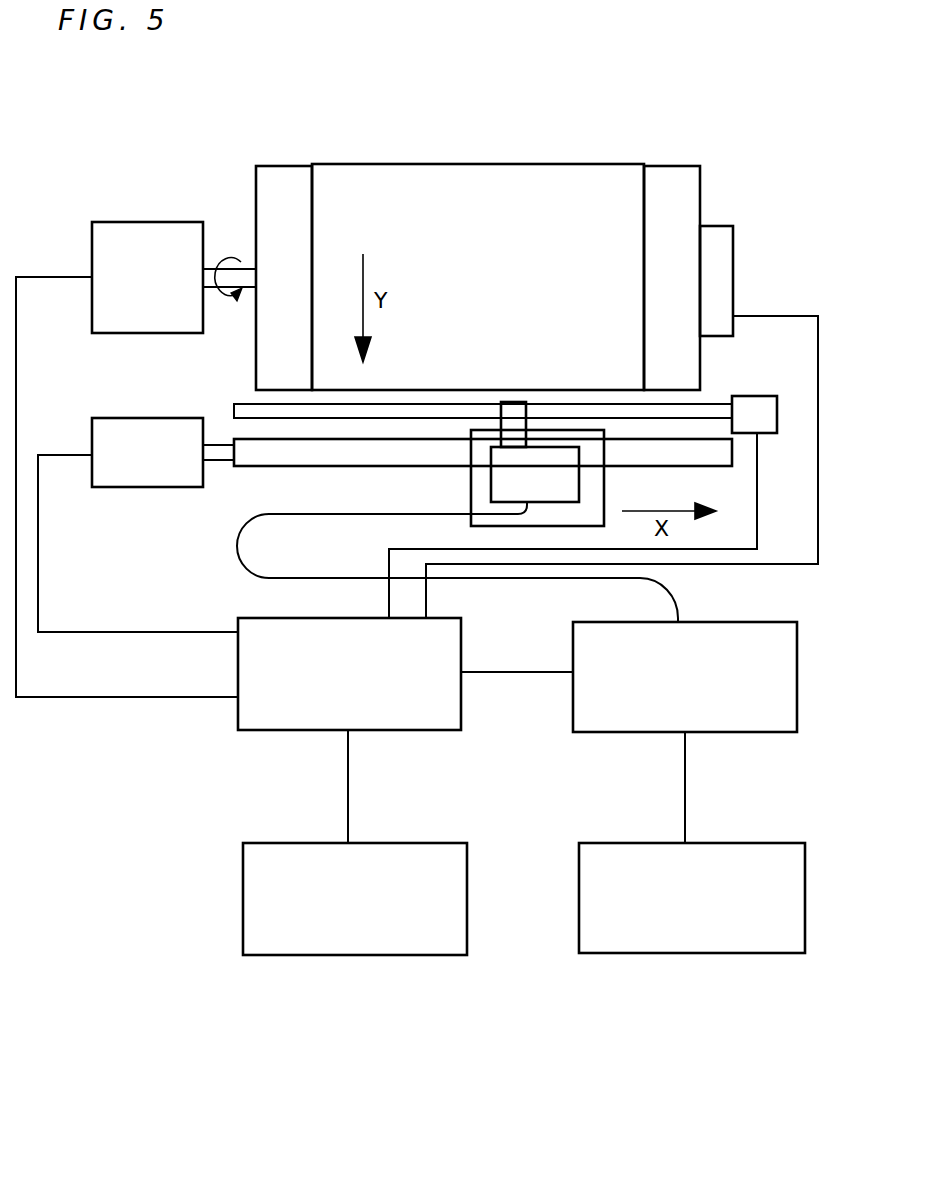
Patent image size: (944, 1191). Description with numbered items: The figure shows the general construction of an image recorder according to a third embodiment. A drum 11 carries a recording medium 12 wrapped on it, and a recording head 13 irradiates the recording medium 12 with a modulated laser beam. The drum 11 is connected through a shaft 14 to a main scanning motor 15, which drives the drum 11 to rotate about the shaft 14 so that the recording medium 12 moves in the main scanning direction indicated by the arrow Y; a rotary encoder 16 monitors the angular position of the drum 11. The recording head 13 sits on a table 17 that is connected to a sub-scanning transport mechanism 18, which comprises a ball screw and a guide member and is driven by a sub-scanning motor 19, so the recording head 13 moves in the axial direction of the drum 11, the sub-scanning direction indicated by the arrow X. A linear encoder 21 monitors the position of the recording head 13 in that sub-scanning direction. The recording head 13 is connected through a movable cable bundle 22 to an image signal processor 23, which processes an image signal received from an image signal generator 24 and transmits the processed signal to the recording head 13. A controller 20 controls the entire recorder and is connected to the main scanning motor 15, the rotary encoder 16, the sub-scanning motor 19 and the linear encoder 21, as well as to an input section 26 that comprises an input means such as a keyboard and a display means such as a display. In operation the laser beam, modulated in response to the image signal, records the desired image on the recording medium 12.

The drum 11 is at (283, 178).
The recording medium 12 is at (490, 175).
The recording head 13 is at (567, 474).
The shaft 14 is at (246, 272).
The main scanning motor 15 is at (123, 237).
The rotary encoder 16 is at (718, 235).
The table 17 is at (480, 489).
The sub-scanning transport mechanism 18 is at (255, 465).
The sub-scanning motor 19 is at (108, 480).
The controller 20 is at (238, 713).
The linear encoder 21 is at (750, 412).
The movable cable bundle 22 is at (237, 558).
The image signal processor 23 is at (760, 720).
The image signal generator 24 is at (762, 938).
The input section 26 is at (250, 937).